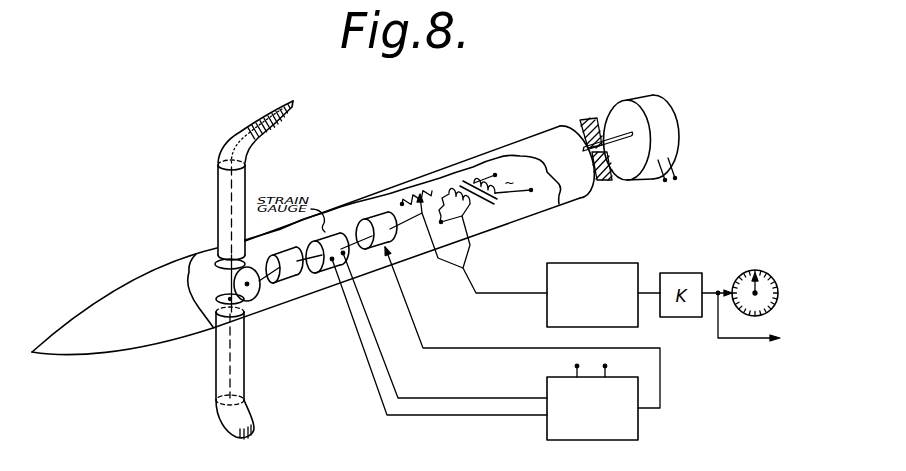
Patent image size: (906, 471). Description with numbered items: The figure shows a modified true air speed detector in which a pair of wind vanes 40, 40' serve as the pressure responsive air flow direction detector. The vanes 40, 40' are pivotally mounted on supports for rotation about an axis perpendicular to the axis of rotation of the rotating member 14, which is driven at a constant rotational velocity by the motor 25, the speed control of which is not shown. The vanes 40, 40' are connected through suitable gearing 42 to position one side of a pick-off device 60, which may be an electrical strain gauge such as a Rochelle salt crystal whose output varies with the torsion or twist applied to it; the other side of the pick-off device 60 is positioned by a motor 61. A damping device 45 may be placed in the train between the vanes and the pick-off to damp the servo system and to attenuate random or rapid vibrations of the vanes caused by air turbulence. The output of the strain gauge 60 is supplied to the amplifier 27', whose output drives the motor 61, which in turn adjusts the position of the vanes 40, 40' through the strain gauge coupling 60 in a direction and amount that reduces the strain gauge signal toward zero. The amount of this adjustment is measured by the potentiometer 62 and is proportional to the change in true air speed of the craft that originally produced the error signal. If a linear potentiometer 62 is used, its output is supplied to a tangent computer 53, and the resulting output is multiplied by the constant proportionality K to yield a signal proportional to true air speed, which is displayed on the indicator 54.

The rotating member 14 is at (502, 146).
The motor 25 is at (633, 97).
The amplifier 27' is at (565, 400).
The wind vane 40 is at (269, 180).
The wind vane 40' is at (261, 373).
The gearing 42 is at (258, 304).
The damping device 45 is at (289, 294).
The tangent computer 53 is at (547, 318).
The indicator meter 54 is at (770, 277).
The pick-off device 60 is at (322, 275).
The motor 61 is at (376, 259).
The potentiometer 62 is at (420, 178).